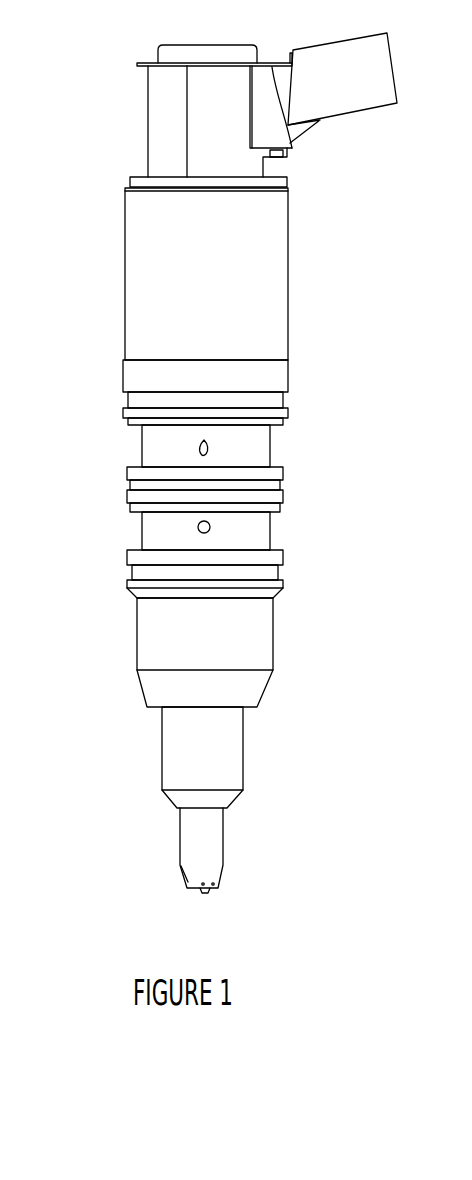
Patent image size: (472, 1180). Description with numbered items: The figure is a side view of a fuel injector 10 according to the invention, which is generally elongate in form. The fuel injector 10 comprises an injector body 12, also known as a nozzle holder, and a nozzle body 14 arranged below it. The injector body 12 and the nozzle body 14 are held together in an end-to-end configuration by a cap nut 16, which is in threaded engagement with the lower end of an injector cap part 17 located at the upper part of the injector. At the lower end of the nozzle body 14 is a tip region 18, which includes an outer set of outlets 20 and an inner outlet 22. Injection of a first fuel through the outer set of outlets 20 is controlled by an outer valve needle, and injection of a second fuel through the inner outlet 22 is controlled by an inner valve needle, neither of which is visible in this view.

The fuel injector 10 is at (61, 102).
The injector body 12 is at (309, 292).
The nozzle body 14 is at (245, 849).
The cap nut 16 is at (262, 647).
The injector cap part 17 is at (301, 160).
The tip region 18 is at (210, 893).
The outer set of outlets 20 is at (189, 879).
The inner outlet 22 is at (200, 894).